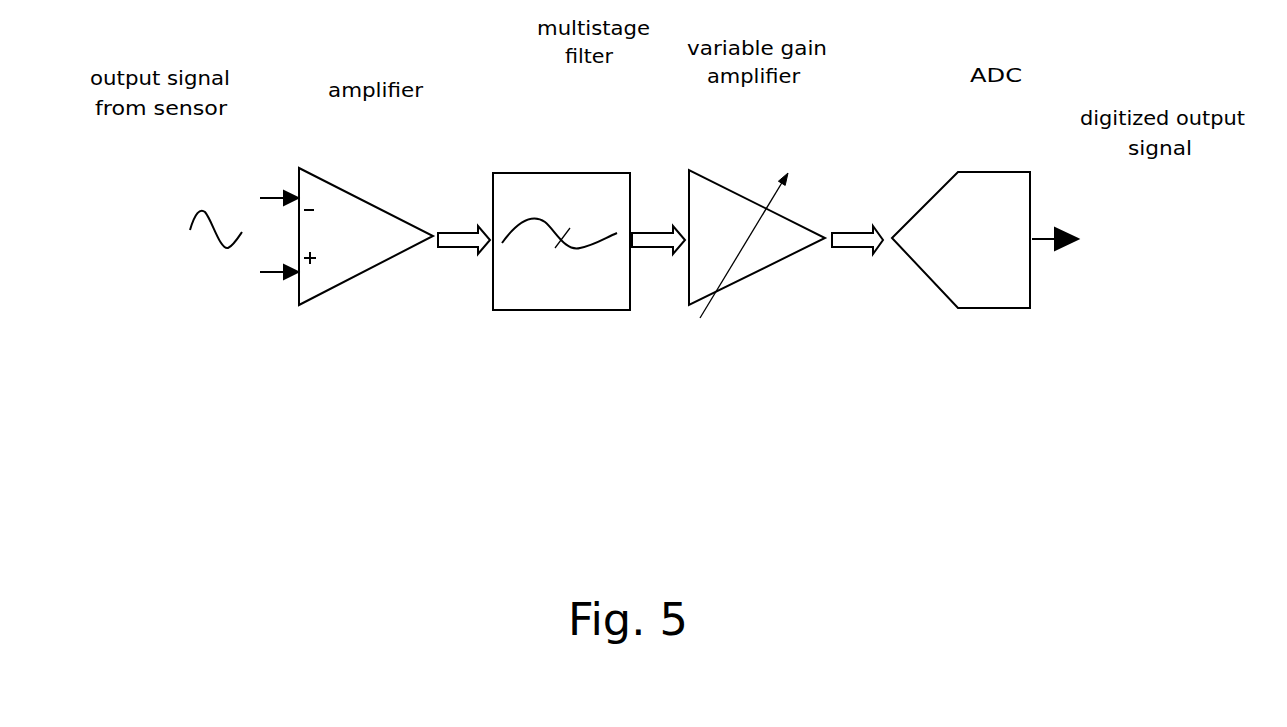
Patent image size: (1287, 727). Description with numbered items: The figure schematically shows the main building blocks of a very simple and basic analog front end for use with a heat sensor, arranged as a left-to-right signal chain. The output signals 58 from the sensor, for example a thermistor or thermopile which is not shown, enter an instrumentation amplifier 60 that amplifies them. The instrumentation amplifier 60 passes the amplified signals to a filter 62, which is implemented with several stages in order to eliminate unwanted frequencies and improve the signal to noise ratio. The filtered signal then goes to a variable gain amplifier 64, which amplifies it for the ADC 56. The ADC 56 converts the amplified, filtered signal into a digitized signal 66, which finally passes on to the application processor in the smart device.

The output signals 58 is at (207, 200).
The instrumentation amplifier 60 is at (348, 190).
The filter 62 is at (548, 177).
The variable gain amplifier 64 is at (723, 190).
The ADC 56 is at (983, 167).
The digitized signal 66 is at (1055, 223).